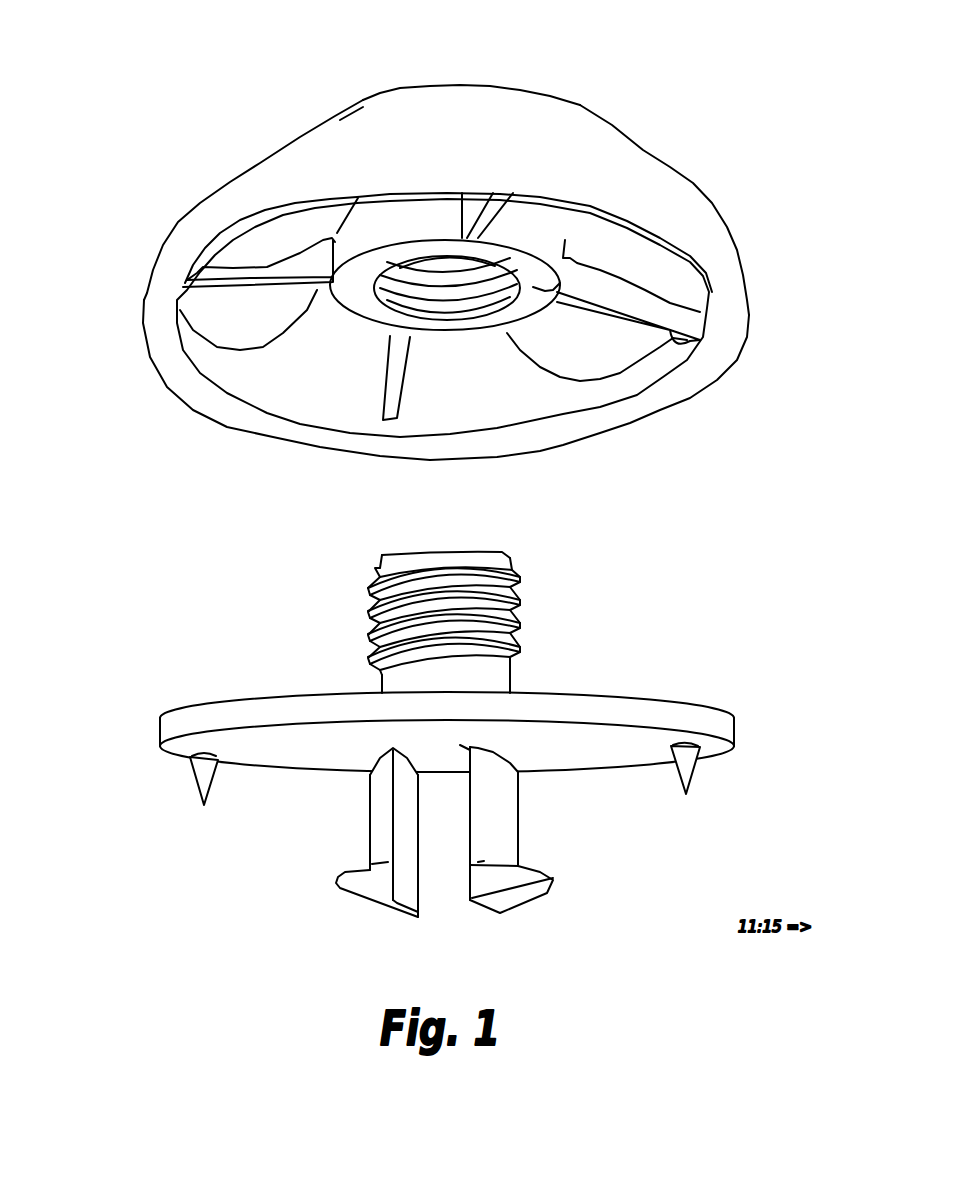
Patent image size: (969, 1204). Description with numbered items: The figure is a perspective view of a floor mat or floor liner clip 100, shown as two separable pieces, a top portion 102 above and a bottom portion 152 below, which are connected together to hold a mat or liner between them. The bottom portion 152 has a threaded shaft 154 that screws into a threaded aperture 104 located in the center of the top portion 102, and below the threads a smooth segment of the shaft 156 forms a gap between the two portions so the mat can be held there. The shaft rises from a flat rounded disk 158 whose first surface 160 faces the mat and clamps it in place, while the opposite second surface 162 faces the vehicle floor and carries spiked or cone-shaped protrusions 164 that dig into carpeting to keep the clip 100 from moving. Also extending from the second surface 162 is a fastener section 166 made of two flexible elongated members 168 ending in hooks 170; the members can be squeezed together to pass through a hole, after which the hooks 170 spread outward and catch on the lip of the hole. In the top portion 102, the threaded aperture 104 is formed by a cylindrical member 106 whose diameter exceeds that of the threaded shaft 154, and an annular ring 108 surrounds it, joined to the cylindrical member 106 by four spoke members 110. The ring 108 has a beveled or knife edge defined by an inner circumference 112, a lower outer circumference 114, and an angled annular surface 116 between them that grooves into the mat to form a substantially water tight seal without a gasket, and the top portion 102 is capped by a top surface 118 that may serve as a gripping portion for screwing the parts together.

The clip 100 is at (173, 612).
The top portion 102 is at (699, 117).
The threaded aperture 104 is at (421, 292).
The cylindrical member 106 is at (548, 290).
The annular ring 108 is at (684, 385).
The spoke members 110 is at (485, 220).
The inner circumference 112 is at (622, 403).
The outer circumference 114 is at (604, 447).
The annular surface 116 is at (255, 413).
The top surface 118 is at (423, 123).
The bottom portion 152 is at (450, 722).
The threaded shaft 154 is at (522, 577).
The segment of the shaft 156 is at (492, 675).
The disk 158 is at (720, 727).
The first surface 160 is at (683, 703).
The second surface 162 is at (720, 753).
The protrusions 164 is at (198, 771).
The fastener section 166 is at (437, 862).
The elongated members 168 is at (380, 819).
The hooks 170 is at (358, 887).